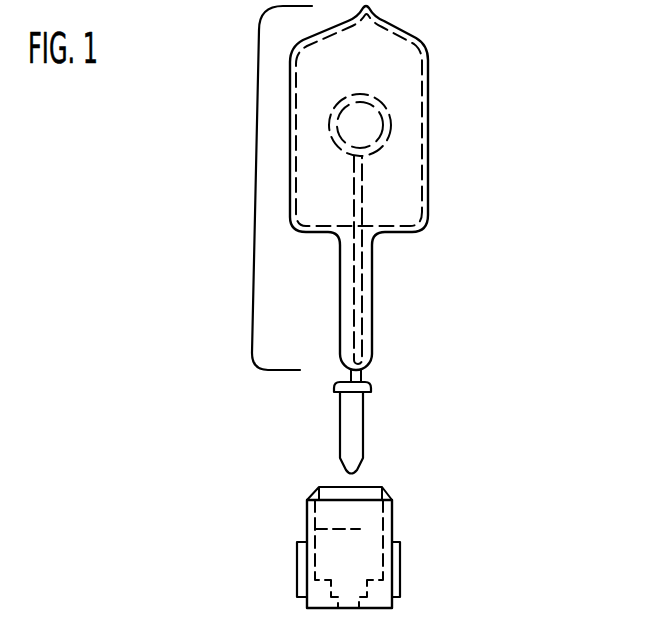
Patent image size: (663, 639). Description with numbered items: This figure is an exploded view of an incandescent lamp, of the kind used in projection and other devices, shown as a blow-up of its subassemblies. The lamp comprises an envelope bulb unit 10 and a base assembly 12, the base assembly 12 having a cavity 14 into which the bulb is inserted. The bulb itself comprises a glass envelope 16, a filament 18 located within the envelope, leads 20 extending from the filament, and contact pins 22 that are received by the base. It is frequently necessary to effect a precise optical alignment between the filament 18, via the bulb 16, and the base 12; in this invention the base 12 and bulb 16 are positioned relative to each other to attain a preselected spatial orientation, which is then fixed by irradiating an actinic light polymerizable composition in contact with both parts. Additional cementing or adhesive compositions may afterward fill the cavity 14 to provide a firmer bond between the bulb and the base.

The envelope bulb unit 10 is at (255, 183).
The base assembly 12 is at (392, 526).
The cavity 14 is at (307, 529).
The glass envelope 16 is at (428, 73).
The filament 18 is at (385, 140).
The leads 20 is at (353, 357).
The contact pins 22 is at (352, 435).